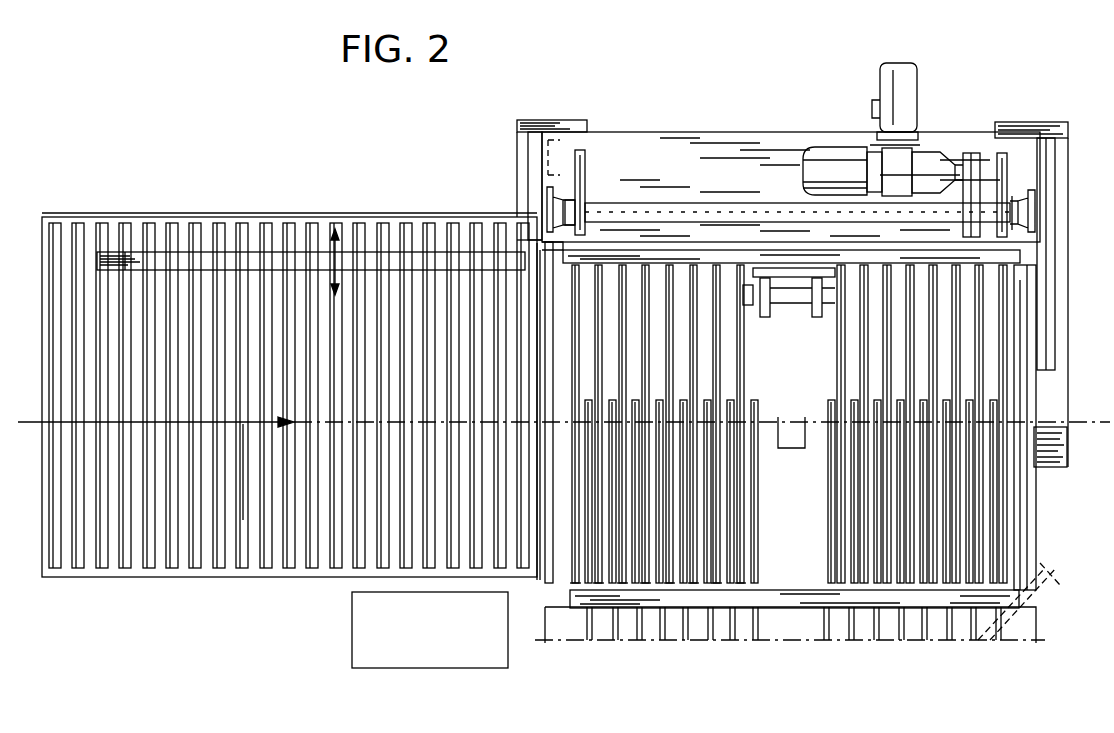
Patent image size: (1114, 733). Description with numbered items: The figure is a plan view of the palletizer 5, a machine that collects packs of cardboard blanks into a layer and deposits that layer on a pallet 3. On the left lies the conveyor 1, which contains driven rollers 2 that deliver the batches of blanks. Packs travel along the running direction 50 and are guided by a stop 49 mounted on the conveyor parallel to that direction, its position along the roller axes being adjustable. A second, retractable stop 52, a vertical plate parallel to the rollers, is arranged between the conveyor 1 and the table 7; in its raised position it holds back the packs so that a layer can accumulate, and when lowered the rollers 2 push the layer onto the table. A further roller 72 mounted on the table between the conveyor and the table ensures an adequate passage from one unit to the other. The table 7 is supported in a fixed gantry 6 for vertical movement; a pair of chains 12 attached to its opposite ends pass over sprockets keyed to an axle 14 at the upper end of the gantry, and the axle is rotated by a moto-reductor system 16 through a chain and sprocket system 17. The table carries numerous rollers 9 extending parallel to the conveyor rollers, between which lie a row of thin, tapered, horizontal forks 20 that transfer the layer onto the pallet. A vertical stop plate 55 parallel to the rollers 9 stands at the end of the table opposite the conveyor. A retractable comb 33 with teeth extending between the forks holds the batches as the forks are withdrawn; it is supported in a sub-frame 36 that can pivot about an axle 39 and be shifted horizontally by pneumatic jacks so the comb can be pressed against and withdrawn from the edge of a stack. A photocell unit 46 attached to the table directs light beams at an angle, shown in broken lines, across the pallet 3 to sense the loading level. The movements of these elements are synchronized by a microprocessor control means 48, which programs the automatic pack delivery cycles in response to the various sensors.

The conveyor 1 is at (289, 408).
The driven rollers 2 is at (300, 228).
The pallet 3 is at (1036, 625).
The palletizer 5 is at (776, 388).
The fixed gantry 6 is at (662, 133).
The table 7 is at (1042, 522).
The rollers 9 is at (1008, 507).
The chains 12 is at (581, 165).
The axle 14 is at (720, 205).
The moto-reductor system 16 is at (833, 162).
The chain and sprocket system 17 is at (972, 160).
The forks 20 is at (615, 628).
The retractable comb 33 is at (935, 603).
The sub-frame 36 is at (788, 489).
The axle 39 is at (793, 300).
The photocell unit 46 is at (1029, 588).
The control means 48 is at (434, 645).
The stop 49 is at (232, 262).
The running direction 50 is at (243, 430).
The retractable stop 52 is at (540, 290).
The vertical stop plate 55 is at (1020, 398).
The roller 72 is at (552, 568).